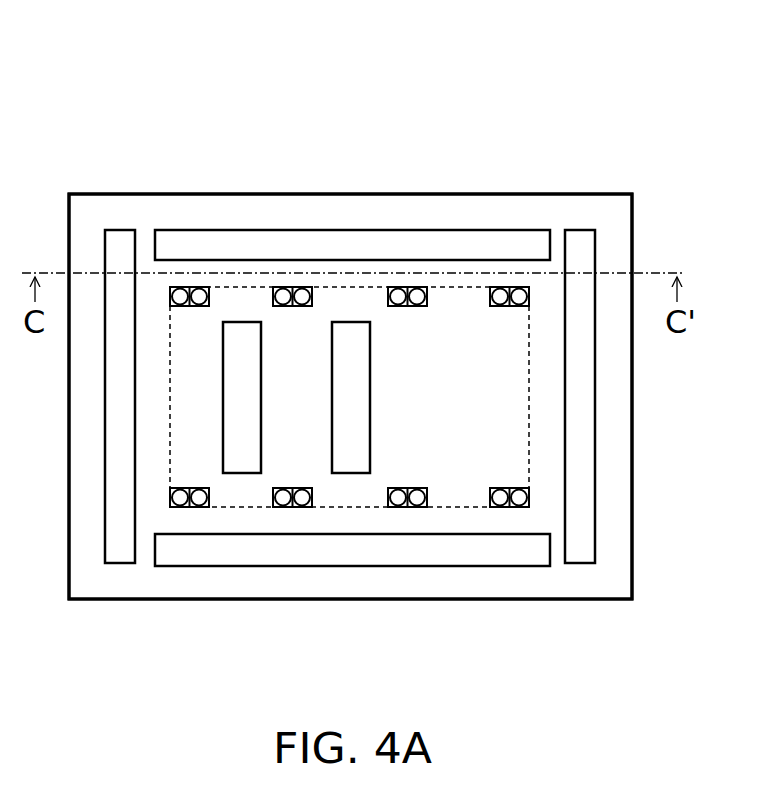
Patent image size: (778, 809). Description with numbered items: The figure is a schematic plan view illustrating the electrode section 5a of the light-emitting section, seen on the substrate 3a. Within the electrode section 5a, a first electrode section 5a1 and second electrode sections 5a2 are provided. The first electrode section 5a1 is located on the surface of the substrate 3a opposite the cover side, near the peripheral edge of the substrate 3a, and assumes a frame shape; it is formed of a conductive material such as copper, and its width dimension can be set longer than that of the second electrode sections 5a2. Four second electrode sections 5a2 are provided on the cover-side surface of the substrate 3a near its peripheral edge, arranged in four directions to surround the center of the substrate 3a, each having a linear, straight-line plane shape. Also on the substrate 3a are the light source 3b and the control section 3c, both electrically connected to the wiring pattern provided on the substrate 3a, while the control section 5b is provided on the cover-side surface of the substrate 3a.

The electrode section 5a is at (621, 125).
The first electrode section 5a1 is at (447, 296).
The second electrode sections 5a2 is at (435, 248).
The control section 5b is at (240, 342).
The substrate 3a is at (328, 582).
The light source 3b is at (293, 292).
The control section 3c is at (350, 348).